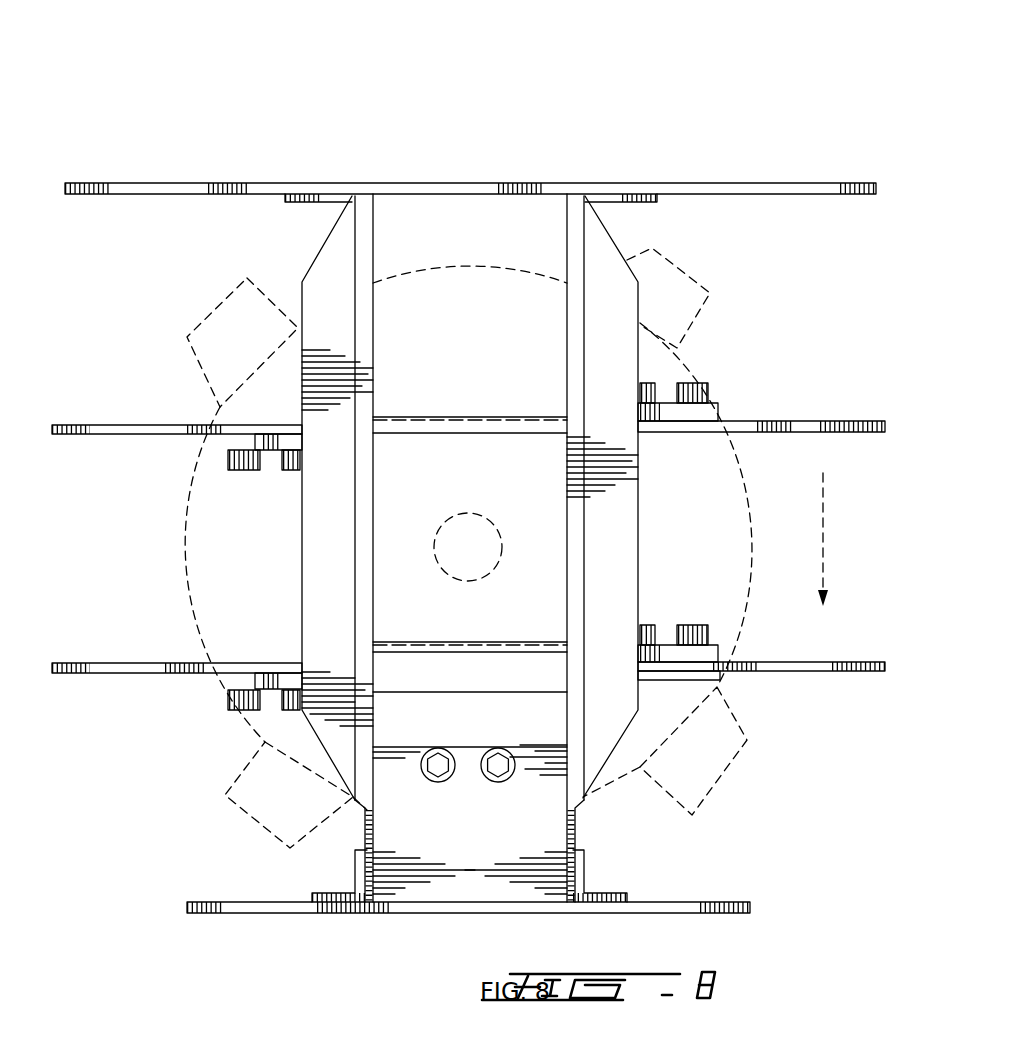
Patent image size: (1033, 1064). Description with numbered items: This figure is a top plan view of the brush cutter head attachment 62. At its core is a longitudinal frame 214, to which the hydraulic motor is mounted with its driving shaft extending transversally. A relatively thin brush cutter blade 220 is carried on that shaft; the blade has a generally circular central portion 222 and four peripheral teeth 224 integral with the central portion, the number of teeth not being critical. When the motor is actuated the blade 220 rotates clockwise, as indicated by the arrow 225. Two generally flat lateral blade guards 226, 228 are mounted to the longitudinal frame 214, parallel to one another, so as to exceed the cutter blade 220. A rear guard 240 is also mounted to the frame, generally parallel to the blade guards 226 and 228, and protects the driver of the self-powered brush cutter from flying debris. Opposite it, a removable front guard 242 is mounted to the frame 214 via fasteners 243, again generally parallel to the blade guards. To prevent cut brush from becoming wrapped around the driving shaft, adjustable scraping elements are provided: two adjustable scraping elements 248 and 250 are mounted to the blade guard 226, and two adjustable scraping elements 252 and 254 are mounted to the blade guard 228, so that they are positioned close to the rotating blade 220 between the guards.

The brush cutter head attachment 62 is at (750, 98).
The longitudinal frame 214 is at (378, 258).
The rear guard 240 is at (180, 186).
The lateral blade guard 228 is at (88, 435).
The adjustable scraping element 254 is at (700, 414).
The adjustable scraping element 252 is at (263, 470).
The lateral blade guard 226 is at (115, 674).
The adjustable scraping element 248 is at (250, 683).
The adjustable scraping element 250 is at (663, 655).
The fasteners 243 is at (498, 775).
The removable front guard 242 is at (752, 906).
The central portion 222 is at (267, 608).
The brush cutter blade 220 is at (232, 581).
The arrow 225 is at (823, 503).
The peripheral teeth 224 is at (220, 303).